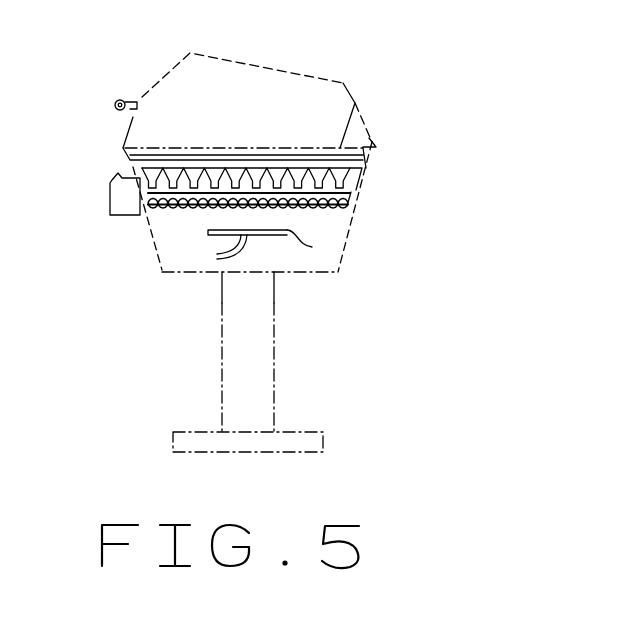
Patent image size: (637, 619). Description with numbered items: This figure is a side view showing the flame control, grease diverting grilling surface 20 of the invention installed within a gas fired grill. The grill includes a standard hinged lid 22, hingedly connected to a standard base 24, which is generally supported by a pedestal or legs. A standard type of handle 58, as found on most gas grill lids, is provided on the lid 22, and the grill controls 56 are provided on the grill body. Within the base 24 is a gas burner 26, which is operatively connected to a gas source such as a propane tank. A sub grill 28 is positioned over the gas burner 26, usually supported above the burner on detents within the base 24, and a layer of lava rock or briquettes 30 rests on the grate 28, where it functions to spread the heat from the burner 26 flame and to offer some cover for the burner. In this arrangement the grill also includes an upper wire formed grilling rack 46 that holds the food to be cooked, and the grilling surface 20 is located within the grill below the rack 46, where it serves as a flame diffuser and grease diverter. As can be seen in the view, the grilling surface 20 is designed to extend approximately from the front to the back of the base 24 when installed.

The grilling surface 20 is at (142, 212).
The hinged lid 22 is at (255, 90).
The base 24 is at (198, 247).
The gas burner 26 is at (312, 247).
The sub grill 28 is at (351, 203).
The lava rock or briquettes 30 is at (366, 168).
The grilling rack 46 is at (355, 103).
The grill controls 56 is at (125, 197).
The handle 58 is at (121, 99).